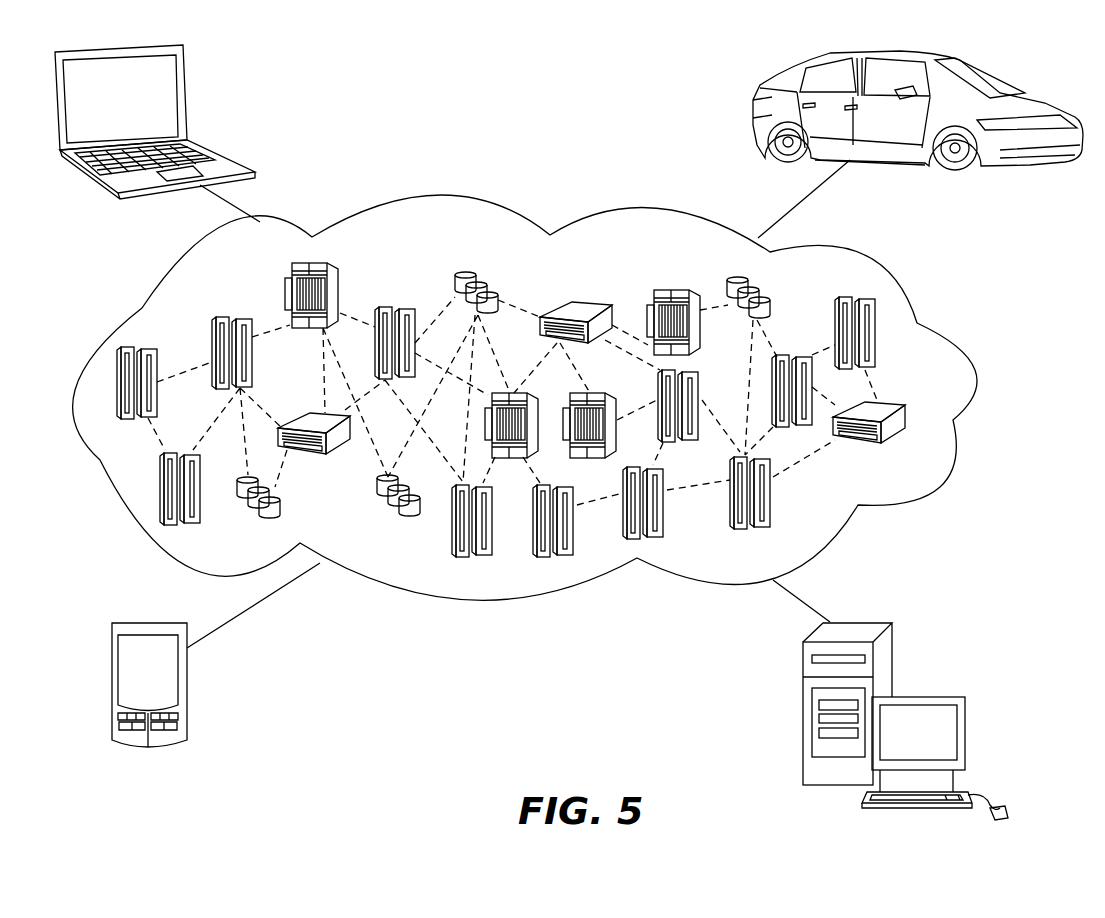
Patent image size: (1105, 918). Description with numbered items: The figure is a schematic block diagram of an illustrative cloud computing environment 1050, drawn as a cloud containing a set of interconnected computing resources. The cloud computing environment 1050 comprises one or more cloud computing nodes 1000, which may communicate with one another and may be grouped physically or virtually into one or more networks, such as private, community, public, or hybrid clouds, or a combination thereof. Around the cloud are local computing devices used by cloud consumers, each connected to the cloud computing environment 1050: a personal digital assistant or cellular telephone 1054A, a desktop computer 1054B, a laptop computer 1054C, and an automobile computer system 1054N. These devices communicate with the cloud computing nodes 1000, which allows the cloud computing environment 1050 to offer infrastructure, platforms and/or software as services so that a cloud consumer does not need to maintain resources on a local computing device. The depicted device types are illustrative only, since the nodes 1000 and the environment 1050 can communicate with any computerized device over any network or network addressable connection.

The laptop computer 1054C is at (168, 100).
The automobile computer system 1054N is at (753, 118).
The personal digital assistant (PDA) or cellular telephone 1054A is at (170, 688).
The desktop computer 1054B is at (958, 732).
The cloud computing environment 1050 is at (955, 353).
The cloud computing node 1000 is at (903, 442).